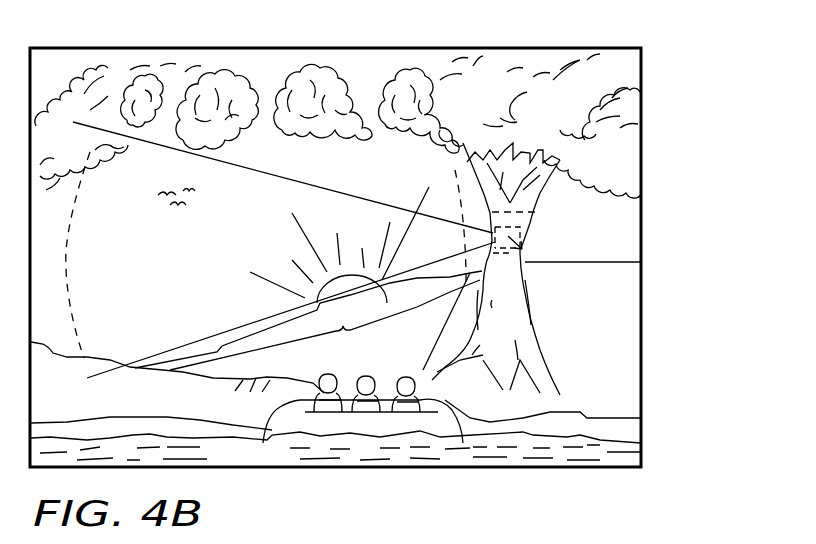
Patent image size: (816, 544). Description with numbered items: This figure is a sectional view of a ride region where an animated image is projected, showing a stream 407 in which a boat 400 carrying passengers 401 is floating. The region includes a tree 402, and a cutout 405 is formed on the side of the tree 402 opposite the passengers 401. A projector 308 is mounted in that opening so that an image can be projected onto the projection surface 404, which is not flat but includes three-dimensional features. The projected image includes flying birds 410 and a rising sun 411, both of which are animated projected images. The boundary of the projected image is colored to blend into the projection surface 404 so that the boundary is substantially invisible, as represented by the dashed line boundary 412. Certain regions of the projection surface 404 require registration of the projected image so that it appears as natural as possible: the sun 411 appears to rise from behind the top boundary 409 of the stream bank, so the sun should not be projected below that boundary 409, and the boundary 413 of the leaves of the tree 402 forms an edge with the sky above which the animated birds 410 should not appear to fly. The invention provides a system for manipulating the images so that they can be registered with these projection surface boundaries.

The projection surface 404 is at (422, 44).
The boundary of the leaves of the tree 413 is at (342, 130).
The flying birds 410 is at (168, 213).
The rising sun 411 is at (310, 289).
The dashed line boundary 412 is at (451, 172).
The top boundary of the stream bank 409 is at (291, 310).
The tree 402 is at (507, 328).
The cutout 405 is at (522, 219).
The projector 308 is at (523, 250).
The boat 400 is at (445, 417).
The passengers 401 is at (322, 393).
The stream 407 is at (624, 453).